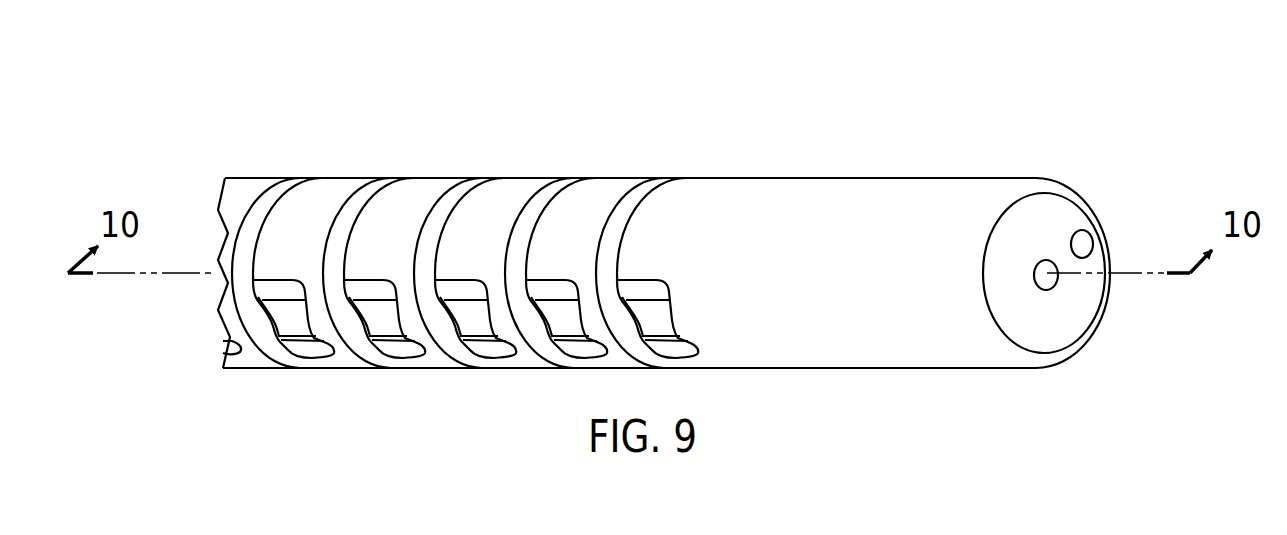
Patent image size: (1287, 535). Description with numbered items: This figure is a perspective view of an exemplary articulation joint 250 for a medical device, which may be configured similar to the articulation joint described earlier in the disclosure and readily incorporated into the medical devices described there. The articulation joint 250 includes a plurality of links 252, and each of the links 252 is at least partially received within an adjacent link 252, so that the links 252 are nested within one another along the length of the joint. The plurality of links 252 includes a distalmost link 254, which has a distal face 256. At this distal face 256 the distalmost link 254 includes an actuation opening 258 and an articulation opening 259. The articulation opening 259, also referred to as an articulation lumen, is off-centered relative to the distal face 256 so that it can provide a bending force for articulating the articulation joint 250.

The articulation joint 250 is at (1104, 111).
The links 252 is at (333, 188).
The distalmost link 254 is at (815, 187).
The distal face 256 is at (1073, 322).
The actuation opening 258 is at (1046, 267).
The articulation opening 259 is at (1084, 246).